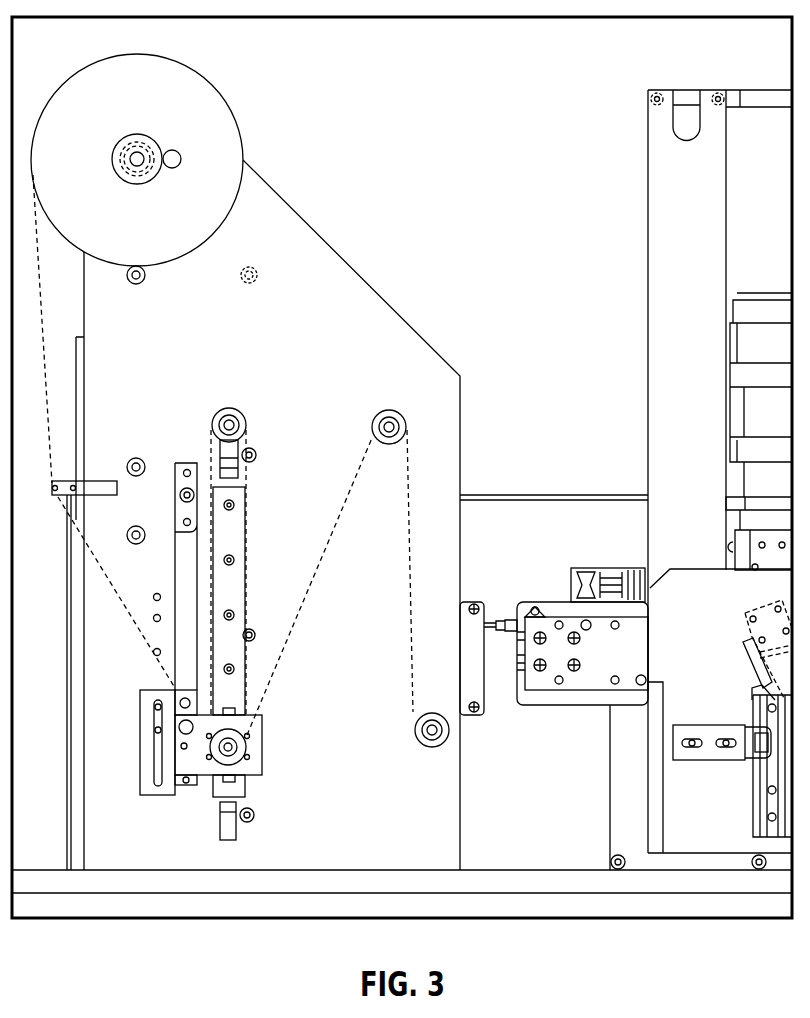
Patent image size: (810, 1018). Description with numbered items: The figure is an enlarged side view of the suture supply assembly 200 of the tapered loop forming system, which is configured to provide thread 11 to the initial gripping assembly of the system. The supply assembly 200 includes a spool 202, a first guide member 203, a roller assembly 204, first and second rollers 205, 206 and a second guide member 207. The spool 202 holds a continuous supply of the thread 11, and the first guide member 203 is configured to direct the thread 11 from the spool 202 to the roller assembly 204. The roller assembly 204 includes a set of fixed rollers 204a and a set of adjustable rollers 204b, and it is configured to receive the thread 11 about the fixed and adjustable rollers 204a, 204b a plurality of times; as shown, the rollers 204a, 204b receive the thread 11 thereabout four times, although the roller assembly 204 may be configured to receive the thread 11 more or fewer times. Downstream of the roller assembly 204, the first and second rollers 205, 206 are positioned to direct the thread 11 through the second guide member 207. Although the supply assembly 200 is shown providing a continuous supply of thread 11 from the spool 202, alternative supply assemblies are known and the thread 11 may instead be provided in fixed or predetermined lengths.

The supply assembly 200 is at (370, 229).
The spool 202 is at (233, 106).
The thread 11 is at (44, 327).
The first guide member 203 is at (57, 481).
The roller assembly 204 is at (237, 398).
The set of fixed rollers 204a is at (247, 428).
The set of adjustable rollers 204b is at (247, 748).
The first roller 205 is at (392, 411).
The second roller 206 is at (430, 748).
The second guide member 207 is at (748, 762).